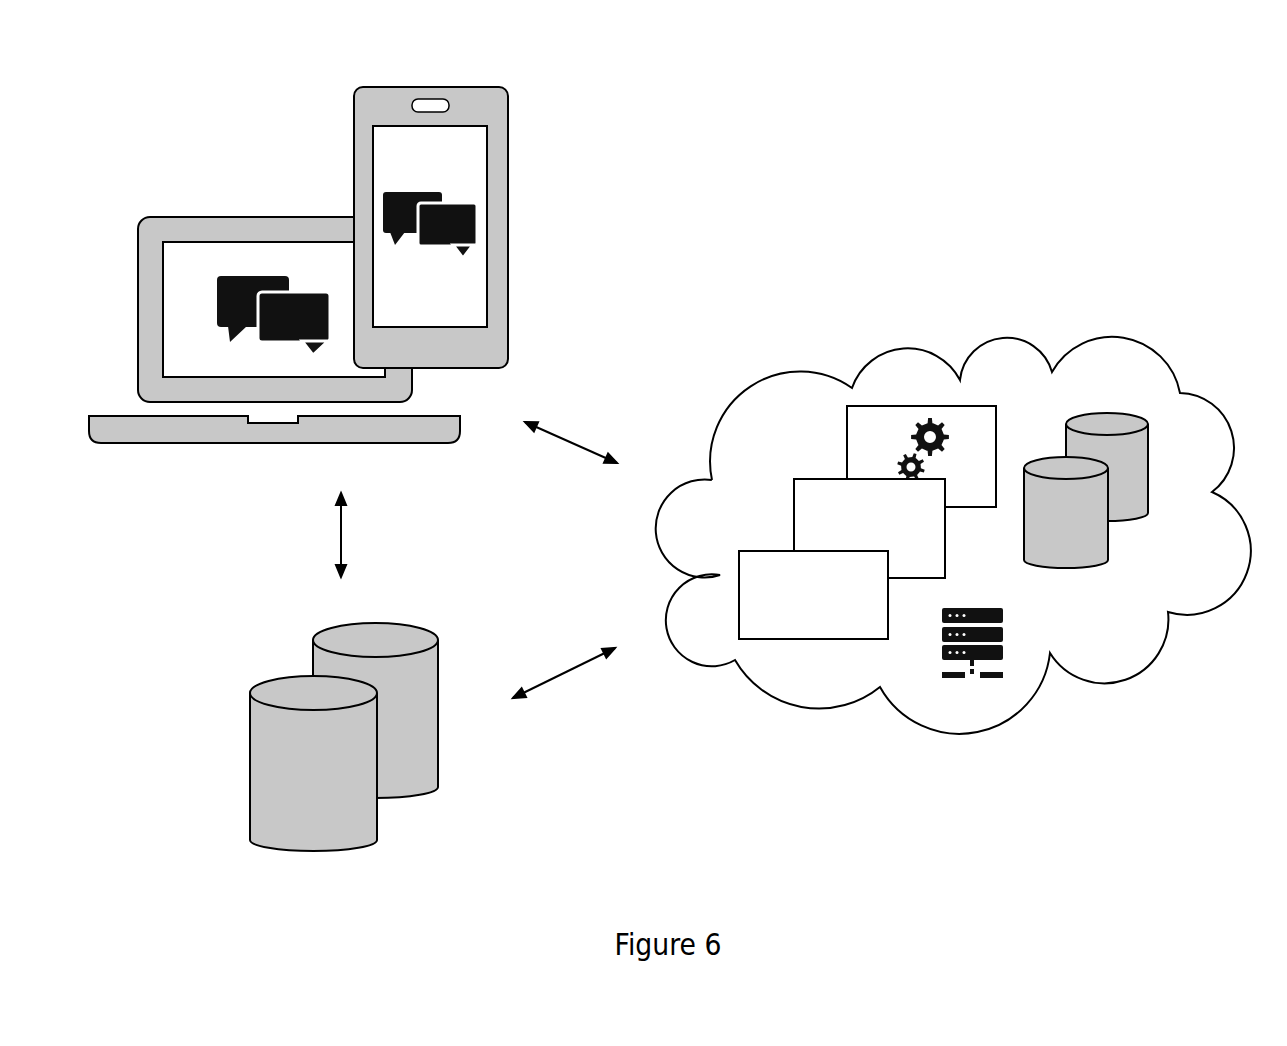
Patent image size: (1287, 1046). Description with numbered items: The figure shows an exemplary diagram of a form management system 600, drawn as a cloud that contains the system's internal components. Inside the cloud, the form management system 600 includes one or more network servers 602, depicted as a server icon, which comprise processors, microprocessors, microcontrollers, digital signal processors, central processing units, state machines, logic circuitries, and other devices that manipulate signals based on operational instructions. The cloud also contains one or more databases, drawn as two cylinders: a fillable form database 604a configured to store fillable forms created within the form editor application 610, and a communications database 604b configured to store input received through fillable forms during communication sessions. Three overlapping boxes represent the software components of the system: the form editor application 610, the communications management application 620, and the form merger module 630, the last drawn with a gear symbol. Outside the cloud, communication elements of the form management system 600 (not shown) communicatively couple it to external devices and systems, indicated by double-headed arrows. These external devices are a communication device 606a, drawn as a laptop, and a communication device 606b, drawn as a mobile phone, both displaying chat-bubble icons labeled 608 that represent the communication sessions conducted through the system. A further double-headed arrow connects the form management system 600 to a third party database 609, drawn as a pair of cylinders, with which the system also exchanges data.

The form management system 600 is at (953, 532).
The network server 602 is at (925, 640).
The fillable form database 604a is at (1066, 537).
The communications database 604b is at (1107, 446).
The communication device 606a is at (274, 355).
The communication device 606b is at (431, 203).
The chat messaging application 608 is at (370, 225).
The third party database 609 is at (308, 737).
The form editor application 610 is at (925, 546).
The communications management application 620 is at (840, 632).
The form merger module 630 is at (843, 455).